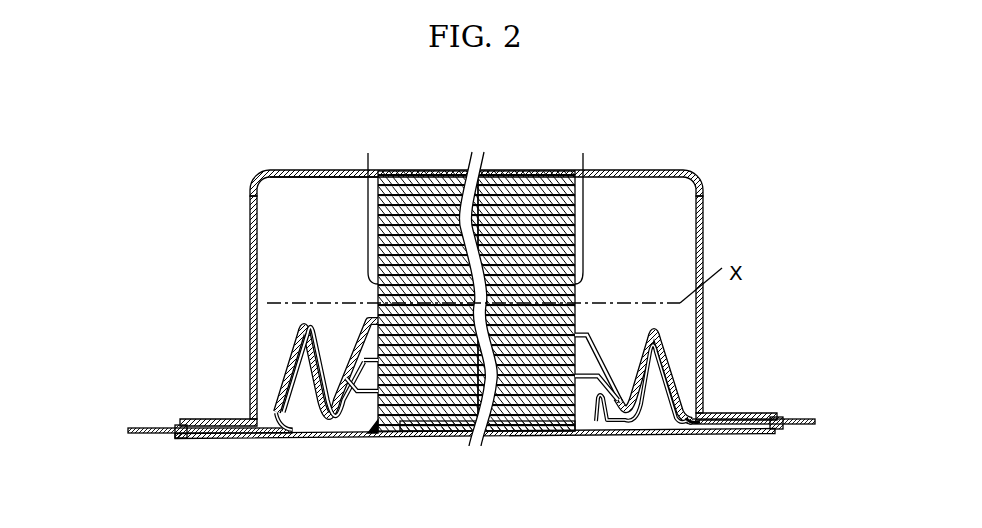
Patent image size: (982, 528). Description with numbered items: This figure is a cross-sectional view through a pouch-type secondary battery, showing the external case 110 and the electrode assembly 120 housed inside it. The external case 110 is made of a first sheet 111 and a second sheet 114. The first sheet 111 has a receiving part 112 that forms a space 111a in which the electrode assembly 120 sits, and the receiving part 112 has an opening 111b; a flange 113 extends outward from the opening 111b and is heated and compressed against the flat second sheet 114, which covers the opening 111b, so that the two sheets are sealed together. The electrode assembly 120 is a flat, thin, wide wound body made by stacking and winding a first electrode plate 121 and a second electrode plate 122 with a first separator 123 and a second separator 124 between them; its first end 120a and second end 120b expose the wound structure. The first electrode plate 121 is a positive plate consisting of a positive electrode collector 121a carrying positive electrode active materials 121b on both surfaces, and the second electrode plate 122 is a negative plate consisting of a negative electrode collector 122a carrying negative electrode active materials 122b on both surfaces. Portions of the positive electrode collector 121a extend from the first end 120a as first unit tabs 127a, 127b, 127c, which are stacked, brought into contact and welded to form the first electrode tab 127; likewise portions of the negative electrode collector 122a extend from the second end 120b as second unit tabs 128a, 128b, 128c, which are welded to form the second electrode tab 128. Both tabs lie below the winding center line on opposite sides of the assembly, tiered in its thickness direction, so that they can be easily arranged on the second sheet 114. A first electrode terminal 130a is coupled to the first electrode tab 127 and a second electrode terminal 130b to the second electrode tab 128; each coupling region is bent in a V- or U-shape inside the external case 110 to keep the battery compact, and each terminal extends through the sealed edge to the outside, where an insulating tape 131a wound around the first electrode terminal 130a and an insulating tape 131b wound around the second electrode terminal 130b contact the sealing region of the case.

The external case 110 is at (495, 312).
The first sheet 111 is at (262, 174).
The space 111a is at (272, 222).
The opening 111b is at (373, 436).
The receiving part 112 is at (250, 270).
The flange 113 is at (212, 419).
The second sheet 114 is at (298, 439).
The electrode assembly 120 is at (489, 319).
The first end 120a is at (362, 207).
The second end 120b is at (591, 207).
The first electrode plate 121 is at (373, 404).
The positive electrode collector 121a is at (430, 441).
The positive electrode active materials 121b is at (403, 441).
The second electrode plate 122 is at (590, 424).
The negative electrode collector 122a is at (532, 421).
The negative electrode active materials 122b is at (512, 421).
The first separator 123 is at (555, 421).
The second separator 124 is at (465, 441).
The first electrode tab 127 is at (276, 397).
The first unit tab 127a is at (297, 323).
The first unit tab 127b is at (297, 339).
The first unit tab 127c is at (273, 436).
The second electrode tab 128 is at (689, 396).
The second unit tab 128a is at (656, 329).
The second unit tab 128b is at (673, 383).
The second unit tab 128c is at (689, 433).
The first electrode terminal 130a is at (142, 428).
The second electrode terminal 130b is at (809, 419).
The insulating tape 131a is at (187, 439).
The insulating tape 131b is at (770, 430).